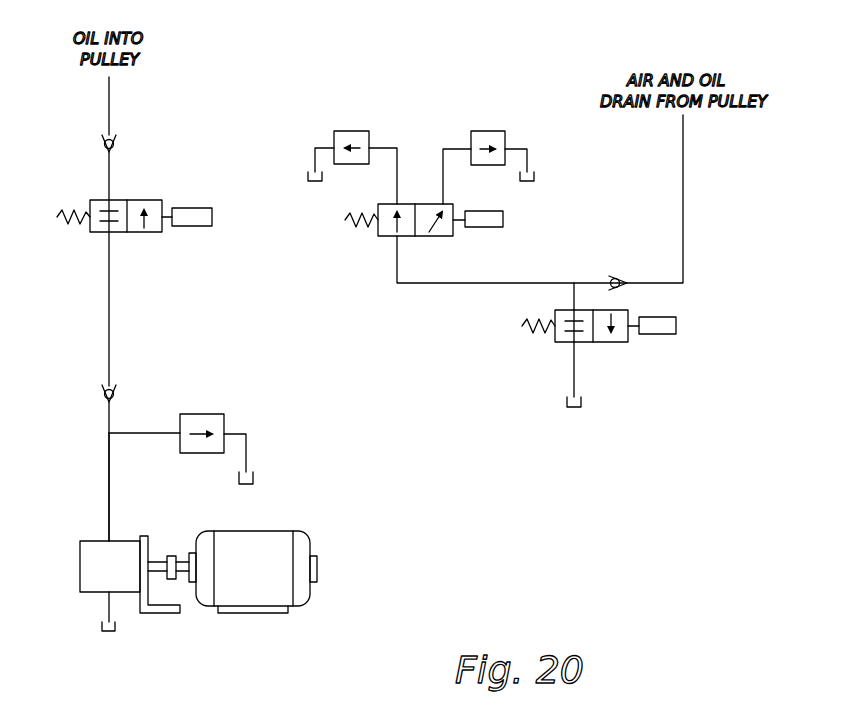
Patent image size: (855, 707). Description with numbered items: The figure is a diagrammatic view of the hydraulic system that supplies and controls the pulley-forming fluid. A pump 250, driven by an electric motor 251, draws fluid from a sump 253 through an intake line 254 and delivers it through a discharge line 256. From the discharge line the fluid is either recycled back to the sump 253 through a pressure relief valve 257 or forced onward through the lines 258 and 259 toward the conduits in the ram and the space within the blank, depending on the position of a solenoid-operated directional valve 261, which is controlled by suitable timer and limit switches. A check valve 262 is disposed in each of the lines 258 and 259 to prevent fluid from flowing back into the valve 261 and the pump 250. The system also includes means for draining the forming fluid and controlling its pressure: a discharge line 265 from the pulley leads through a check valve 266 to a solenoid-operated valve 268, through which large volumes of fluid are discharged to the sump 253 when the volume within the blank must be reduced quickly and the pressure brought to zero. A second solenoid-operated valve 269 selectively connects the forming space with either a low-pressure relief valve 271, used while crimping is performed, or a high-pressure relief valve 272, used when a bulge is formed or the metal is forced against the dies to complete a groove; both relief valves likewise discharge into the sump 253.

The pump 250 is at (80, 576).
The electric motor 251 is at (250, 598).
The sump 253 is at (253, 485).
The intake line 254 is at (105, 605).
The discharge line 256 is at (107, 485).
The pressure relief valve 257 is at (205, 413).
The line 258 is at (112, 325).
The line 259 is at (110, 183).
The solenoid-operated directional valve 261 is at (152, 232).
The check valve 262 is at (103, 148).
The discharge line 265 is at (685, 210).
The check valve 266 is at (622, 276).
The solenoid-operated valve 268 is at (655, 336).
The second solenoid-operated valve 269 is at (485, 228).
The low-pressure relief valve 271 is at (360, 131).
The high-pressure relief valve 272 is at (490, 131).